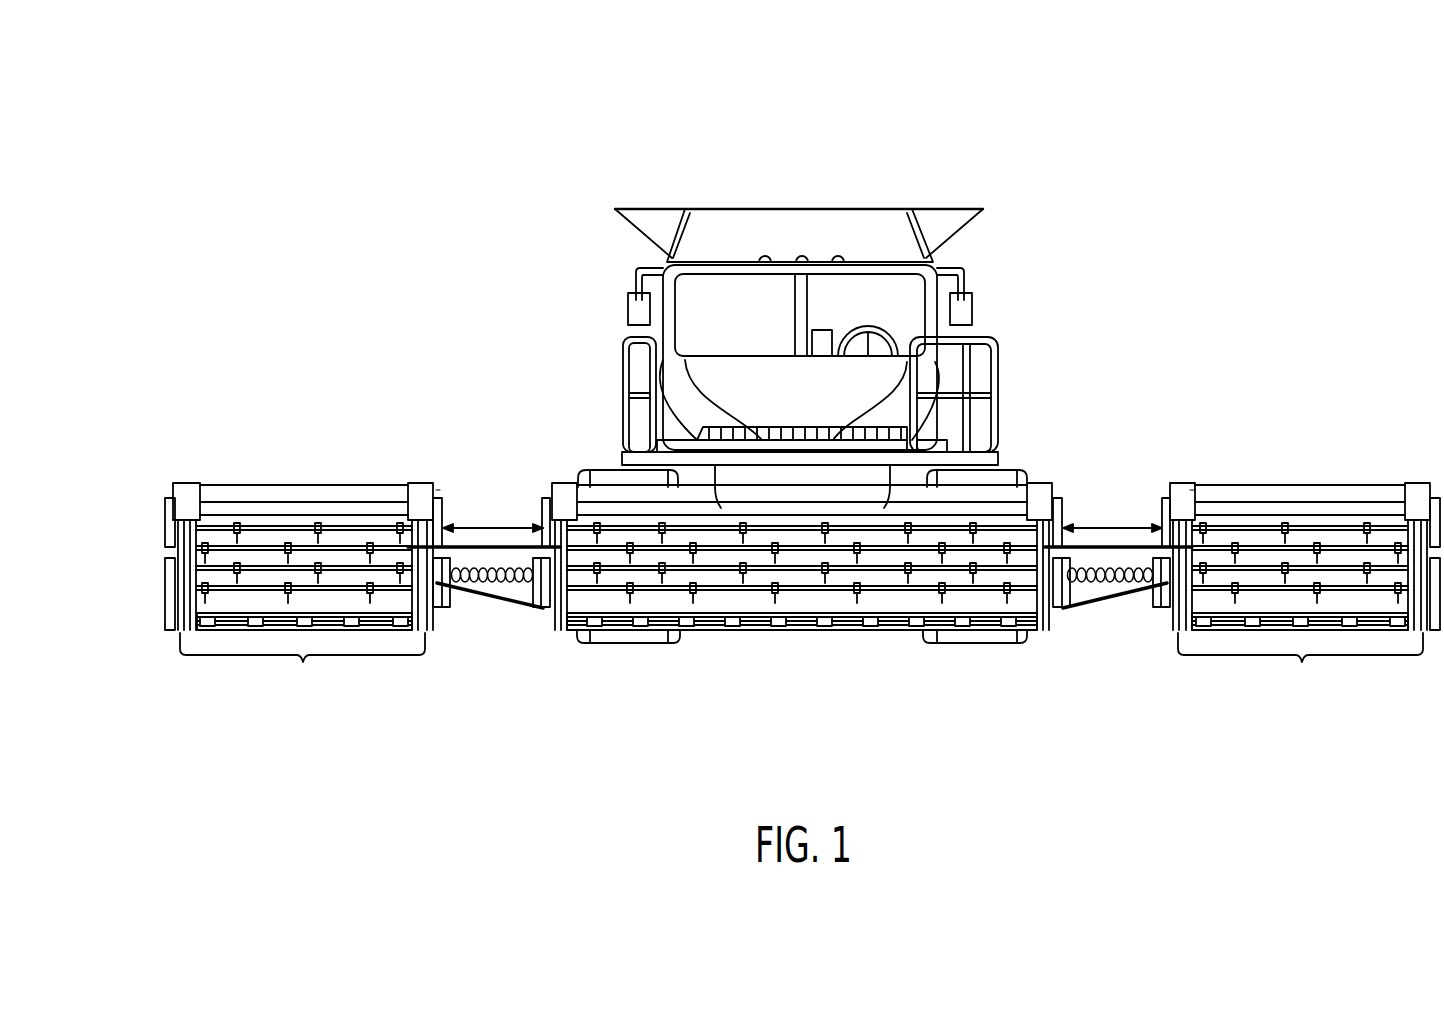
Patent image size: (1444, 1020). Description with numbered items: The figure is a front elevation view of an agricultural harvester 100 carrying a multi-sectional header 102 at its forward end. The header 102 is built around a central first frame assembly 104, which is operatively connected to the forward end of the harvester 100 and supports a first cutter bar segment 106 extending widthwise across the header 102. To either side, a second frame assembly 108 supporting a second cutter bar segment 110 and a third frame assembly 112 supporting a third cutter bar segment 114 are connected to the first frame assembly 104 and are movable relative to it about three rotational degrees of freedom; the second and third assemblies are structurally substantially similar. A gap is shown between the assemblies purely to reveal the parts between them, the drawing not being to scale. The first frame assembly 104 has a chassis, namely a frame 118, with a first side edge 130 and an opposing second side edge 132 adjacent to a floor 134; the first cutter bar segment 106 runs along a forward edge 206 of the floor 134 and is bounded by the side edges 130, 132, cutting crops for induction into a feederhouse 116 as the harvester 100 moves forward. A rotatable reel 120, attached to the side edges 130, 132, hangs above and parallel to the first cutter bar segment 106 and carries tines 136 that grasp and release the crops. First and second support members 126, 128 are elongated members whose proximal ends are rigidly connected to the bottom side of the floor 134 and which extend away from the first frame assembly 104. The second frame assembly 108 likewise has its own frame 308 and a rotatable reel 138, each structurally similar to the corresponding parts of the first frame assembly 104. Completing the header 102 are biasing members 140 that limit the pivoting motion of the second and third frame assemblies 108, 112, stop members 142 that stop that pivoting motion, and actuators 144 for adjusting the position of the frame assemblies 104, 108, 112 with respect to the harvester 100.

The agricultural harvester 100 is at (737, 207).
The header 102 is at (1150, 471).
The first frame assembly 104 is at (1007, 472).
The first cutter bar segment 106 is at (1033, 633).
The second frame assembly 108 is at (293, 480).
The second cutter bar segment 110 is at (302, 655).
The third frame assembly 112 is at (1317, 477).
The third cutter bar segment 114 is at (1300, 653).
The feederhouse 116 is at (857, 475).
The frame 118 is at (625, 507).
The rotatable reel 120 is at (568, 620).
The first support member 126 is at (512, 605).
The second support member 128 is at (1083, 620).
The first side edge 130 is at (535, 490).
The second side edge 132 is at (1070, 500).
The floor 134 is at (800, 603).
The tines 136 is at (692, 593).
The rotatable reel 138 is at (182, 622).
The biasing members 140 is at (497, 600).
The stop members 142 is at (475, 490).
The actuators 144 is at (183, 485).
The forward edge 206 is at (850, 622).
The frame 308 is at (248, 487).